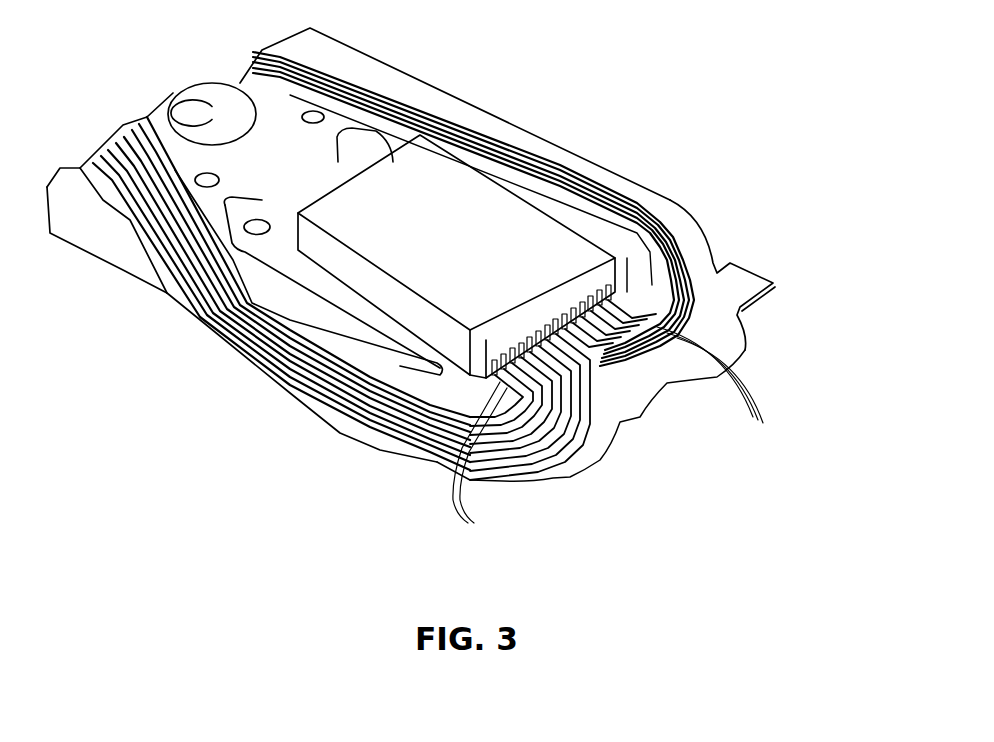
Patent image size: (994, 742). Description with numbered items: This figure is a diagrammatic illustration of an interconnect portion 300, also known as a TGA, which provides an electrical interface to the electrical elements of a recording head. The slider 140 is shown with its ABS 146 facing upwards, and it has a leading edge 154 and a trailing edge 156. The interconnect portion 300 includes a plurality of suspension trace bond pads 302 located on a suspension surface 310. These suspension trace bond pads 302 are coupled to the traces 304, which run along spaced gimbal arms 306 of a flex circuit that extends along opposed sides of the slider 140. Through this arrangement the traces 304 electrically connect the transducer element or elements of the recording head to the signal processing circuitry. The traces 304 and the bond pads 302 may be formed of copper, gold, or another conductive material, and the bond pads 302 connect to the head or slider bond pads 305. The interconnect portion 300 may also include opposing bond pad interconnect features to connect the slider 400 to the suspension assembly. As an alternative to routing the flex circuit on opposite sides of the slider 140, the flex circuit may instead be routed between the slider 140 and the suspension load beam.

The slider 140 is at (434, 256).
The ABS 146 is at (494, 274).
The leading edge 154 is at (388, 147).
The trailing edge 156 is at (590, 377).
The interconnect portion 300 is at (773, 338).
The suspension trace bond pads 302 is at (723, 385).
The traces 304 is at (556, 172).
The slider bond pads 305 is at (480, 461).
The gimbal arms 306 is at (607, 192).
The suspension surface 310 is at (745, 348).
The slider 400 is at (660, 210).